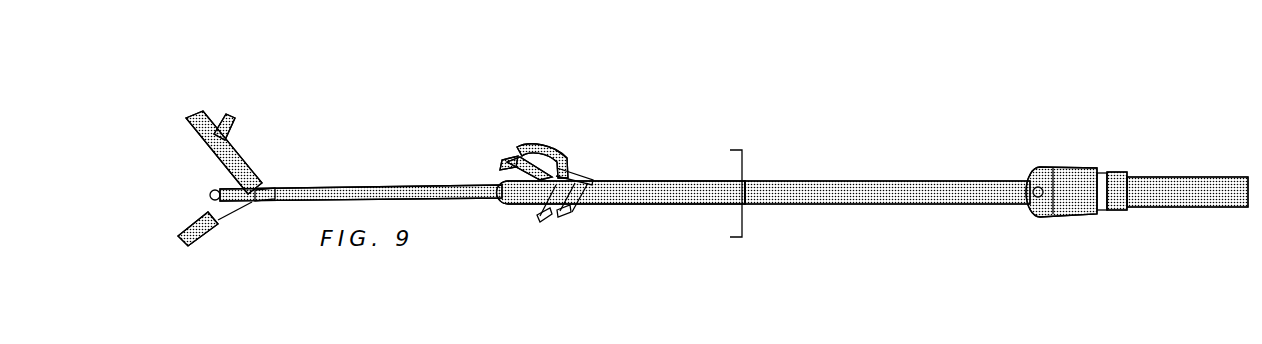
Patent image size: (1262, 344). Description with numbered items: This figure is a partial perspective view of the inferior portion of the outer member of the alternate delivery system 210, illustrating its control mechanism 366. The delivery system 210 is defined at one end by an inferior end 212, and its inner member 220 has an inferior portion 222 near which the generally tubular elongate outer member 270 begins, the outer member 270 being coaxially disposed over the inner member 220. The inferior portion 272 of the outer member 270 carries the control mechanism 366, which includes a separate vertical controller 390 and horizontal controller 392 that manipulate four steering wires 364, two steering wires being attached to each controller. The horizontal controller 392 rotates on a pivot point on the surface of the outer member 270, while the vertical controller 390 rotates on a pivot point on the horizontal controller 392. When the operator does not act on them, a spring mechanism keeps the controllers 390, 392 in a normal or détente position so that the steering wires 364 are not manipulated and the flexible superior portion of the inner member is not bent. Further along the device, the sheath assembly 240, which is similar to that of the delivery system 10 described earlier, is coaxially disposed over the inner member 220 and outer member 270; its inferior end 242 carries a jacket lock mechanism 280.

The delivery system 210 is at (783, 86).
The inferior end 212 is at (197, 183).
The inner member 220 is at (363, 188).
The inferior portion 222 is at (270, 187).
The sheath assembly 240 is at (1157, 180).
The inferior end 242 is at (1107, 212).
The outer member 270 is at (793, 180).
The inferior portion 272 is at (693, 204).
The jacket lock mechanism 280 is at (1082, 168).
The steering wires 364 is at (580, 172).
The control mechanism 366 is at (553, 148).
The vertical controller 390 is at (518, 142).
The horizontal controller 392 is at (500, 158).
The delivery system 10 is at (724, 196).